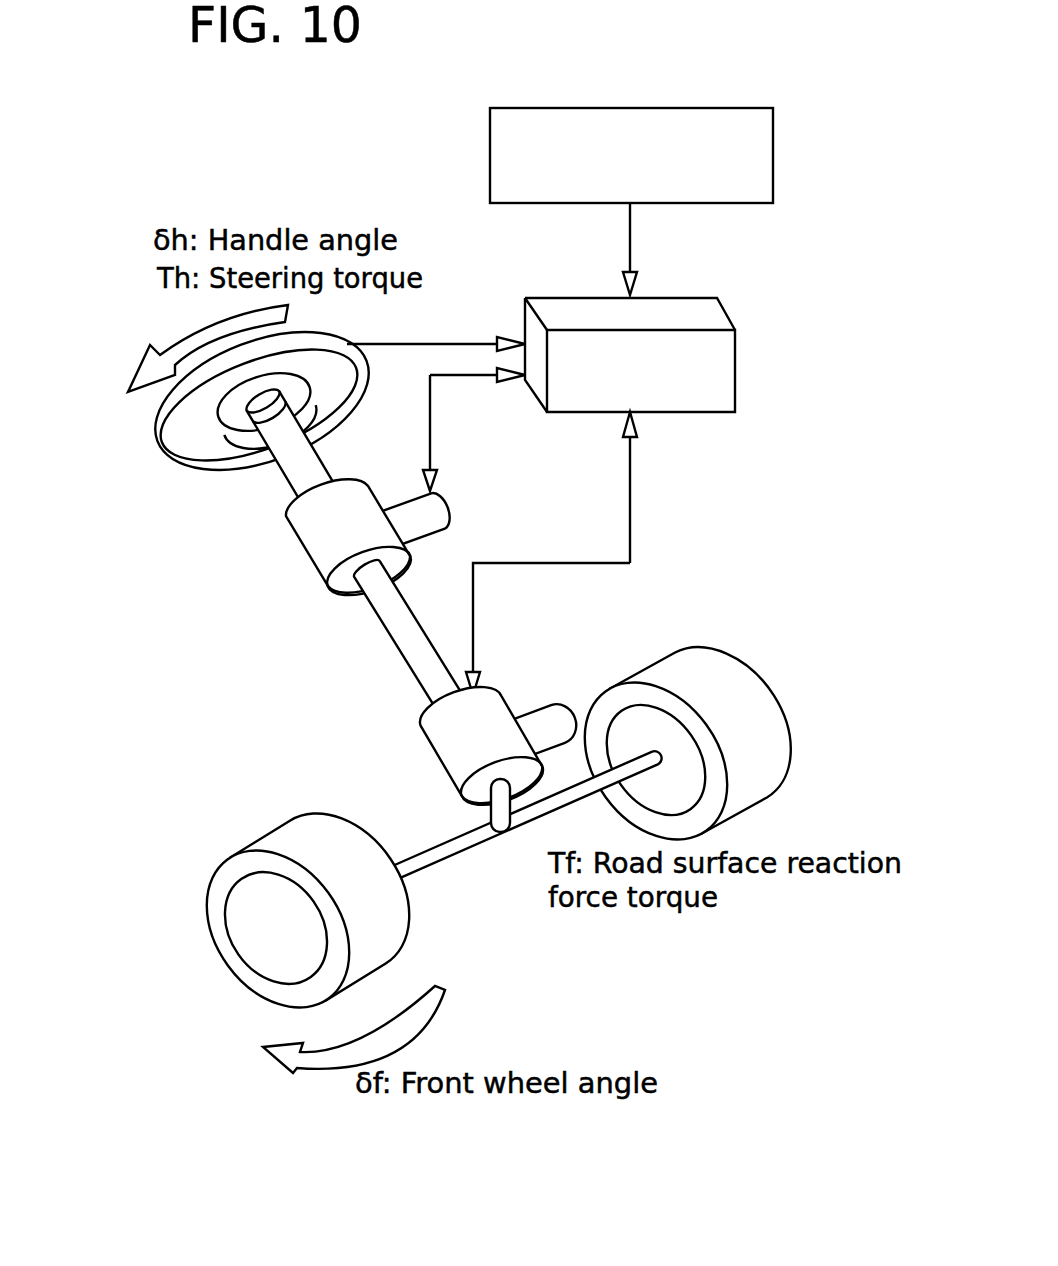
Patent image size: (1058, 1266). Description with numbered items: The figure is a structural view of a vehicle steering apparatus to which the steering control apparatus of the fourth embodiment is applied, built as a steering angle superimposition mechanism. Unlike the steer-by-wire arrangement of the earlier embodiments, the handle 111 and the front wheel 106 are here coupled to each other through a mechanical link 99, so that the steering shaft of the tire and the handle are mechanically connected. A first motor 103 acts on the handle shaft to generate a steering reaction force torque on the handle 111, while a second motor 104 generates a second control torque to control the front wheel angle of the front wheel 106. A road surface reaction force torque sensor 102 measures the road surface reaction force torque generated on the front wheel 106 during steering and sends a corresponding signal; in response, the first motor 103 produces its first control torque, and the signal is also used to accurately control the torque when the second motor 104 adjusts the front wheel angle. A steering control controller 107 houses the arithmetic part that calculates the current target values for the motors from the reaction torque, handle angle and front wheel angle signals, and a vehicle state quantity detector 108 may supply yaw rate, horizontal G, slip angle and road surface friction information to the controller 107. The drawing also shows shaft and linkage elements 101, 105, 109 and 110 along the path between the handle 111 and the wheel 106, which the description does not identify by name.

The mechanical link 99 is at (400, 628).
The steering shaft 101 is at (240, 425).
The road surface reaction force torque sensor 102 is at (489, 817).
The first motor 103 is at (428, 513).
The second motor 104 is at (555, 720).
The steering wheel 105 is at (218, 413).
The front wheel 106 is at (282, 840).
The steering control controller 107 is at (736, 357).
The vehicle state quantity detector 108 is at (774, 139).
The reaction motor 109 is at (330, 547).
The steering motor 110 is at (440, 733).
The handle 111 is at (157, 410).